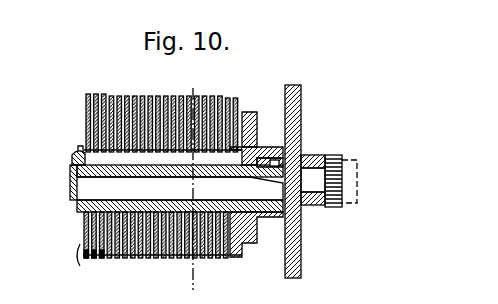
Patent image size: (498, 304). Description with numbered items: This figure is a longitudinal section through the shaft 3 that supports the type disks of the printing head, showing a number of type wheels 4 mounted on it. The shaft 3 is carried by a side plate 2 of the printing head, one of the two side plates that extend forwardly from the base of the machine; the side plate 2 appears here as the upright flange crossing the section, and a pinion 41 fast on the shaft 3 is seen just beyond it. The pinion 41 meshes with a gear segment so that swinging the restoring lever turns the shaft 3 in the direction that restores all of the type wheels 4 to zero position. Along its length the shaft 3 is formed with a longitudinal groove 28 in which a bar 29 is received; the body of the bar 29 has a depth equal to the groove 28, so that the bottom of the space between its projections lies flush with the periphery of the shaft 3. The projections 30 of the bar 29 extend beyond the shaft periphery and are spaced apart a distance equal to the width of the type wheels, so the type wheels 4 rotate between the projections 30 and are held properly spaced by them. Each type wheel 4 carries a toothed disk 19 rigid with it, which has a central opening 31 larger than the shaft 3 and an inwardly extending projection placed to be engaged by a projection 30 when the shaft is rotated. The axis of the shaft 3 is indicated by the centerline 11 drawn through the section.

The side plate 2 is at (301, 100).
The shaft 3 is at (310, 186).
The type wheel 4 is at (103, 97).
The axis centerline 11 is at (195, 189).
The toothed disk 19 is at (108, 250).
The groove 28 is at (72, 171).
The bar 29 is at (75, 157).
The projection 30 is at (80, 148).
The central opening 31 is at (82, 206).
The pinion 41 is at (334, 162).